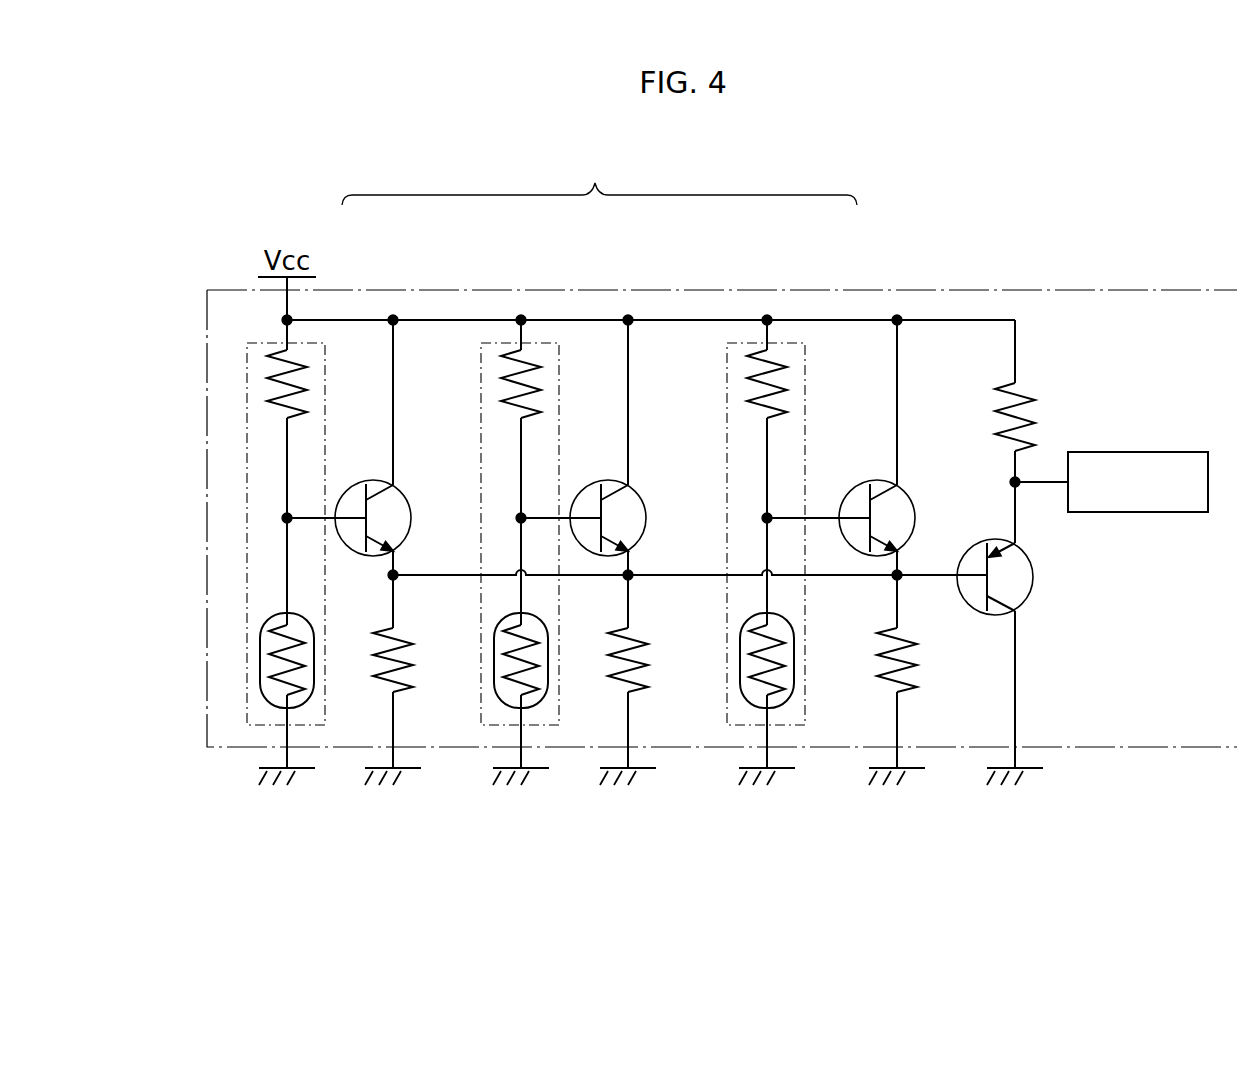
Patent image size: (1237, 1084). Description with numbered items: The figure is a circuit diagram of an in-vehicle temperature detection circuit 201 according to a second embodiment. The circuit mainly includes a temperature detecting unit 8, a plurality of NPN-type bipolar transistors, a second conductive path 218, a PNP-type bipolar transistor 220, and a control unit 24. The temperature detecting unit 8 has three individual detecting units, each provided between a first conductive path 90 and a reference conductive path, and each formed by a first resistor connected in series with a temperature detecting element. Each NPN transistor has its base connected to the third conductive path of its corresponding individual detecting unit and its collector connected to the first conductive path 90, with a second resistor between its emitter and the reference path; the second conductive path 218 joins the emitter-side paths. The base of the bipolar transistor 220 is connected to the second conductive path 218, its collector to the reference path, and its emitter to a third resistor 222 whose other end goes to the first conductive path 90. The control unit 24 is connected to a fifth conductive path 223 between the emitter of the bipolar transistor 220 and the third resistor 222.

The temperature detecting unit 8 is at (599, 178).
The control unit 24 is at (1163, 452).
The first conductive path 90 is at (668, 320).
The temperature detection circuit 201 is at (1122, 290).
The second conductive path 218 is at (668, 575).
The bipolar transistor 220 is at (1033, 578).
The third resistor 222 is at (1035, 395).
The 5th conductive path 223 is at (1018, 520).